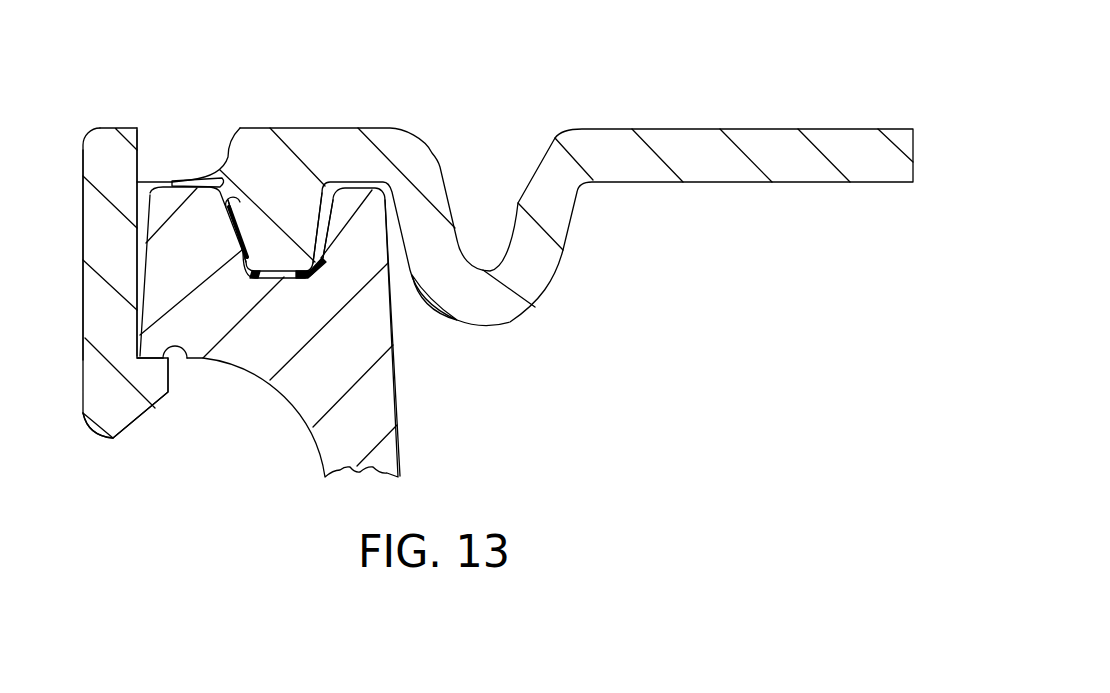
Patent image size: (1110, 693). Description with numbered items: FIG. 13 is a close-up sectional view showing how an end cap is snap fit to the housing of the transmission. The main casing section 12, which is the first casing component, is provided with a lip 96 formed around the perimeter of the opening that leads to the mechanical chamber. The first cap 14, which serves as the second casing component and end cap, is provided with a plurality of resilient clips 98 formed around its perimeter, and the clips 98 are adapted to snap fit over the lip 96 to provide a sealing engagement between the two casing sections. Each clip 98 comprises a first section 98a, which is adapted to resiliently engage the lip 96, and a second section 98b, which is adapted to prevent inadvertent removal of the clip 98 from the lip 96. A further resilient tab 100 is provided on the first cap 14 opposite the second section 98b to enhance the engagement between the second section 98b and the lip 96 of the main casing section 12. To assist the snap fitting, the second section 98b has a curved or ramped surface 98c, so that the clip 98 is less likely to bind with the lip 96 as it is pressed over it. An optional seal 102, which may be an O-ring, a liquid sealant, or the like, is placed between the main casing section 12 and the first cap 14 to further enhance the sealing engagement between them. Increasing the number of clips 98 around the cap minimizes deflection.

The main casing section 12 is at (392, 411).
The first cap 14 is at (682, 138).
The lip 96 is at (233, 345).
The resilient clip 98 is at (72, 337).
The first section 98a is at (104, 143).
The second section 98b is at (140, 418).
The curved or ramped surface 98c is at (187, 362).
The resilient tab 100 is at (192, 178).
The seal 102 is at (318, 240).